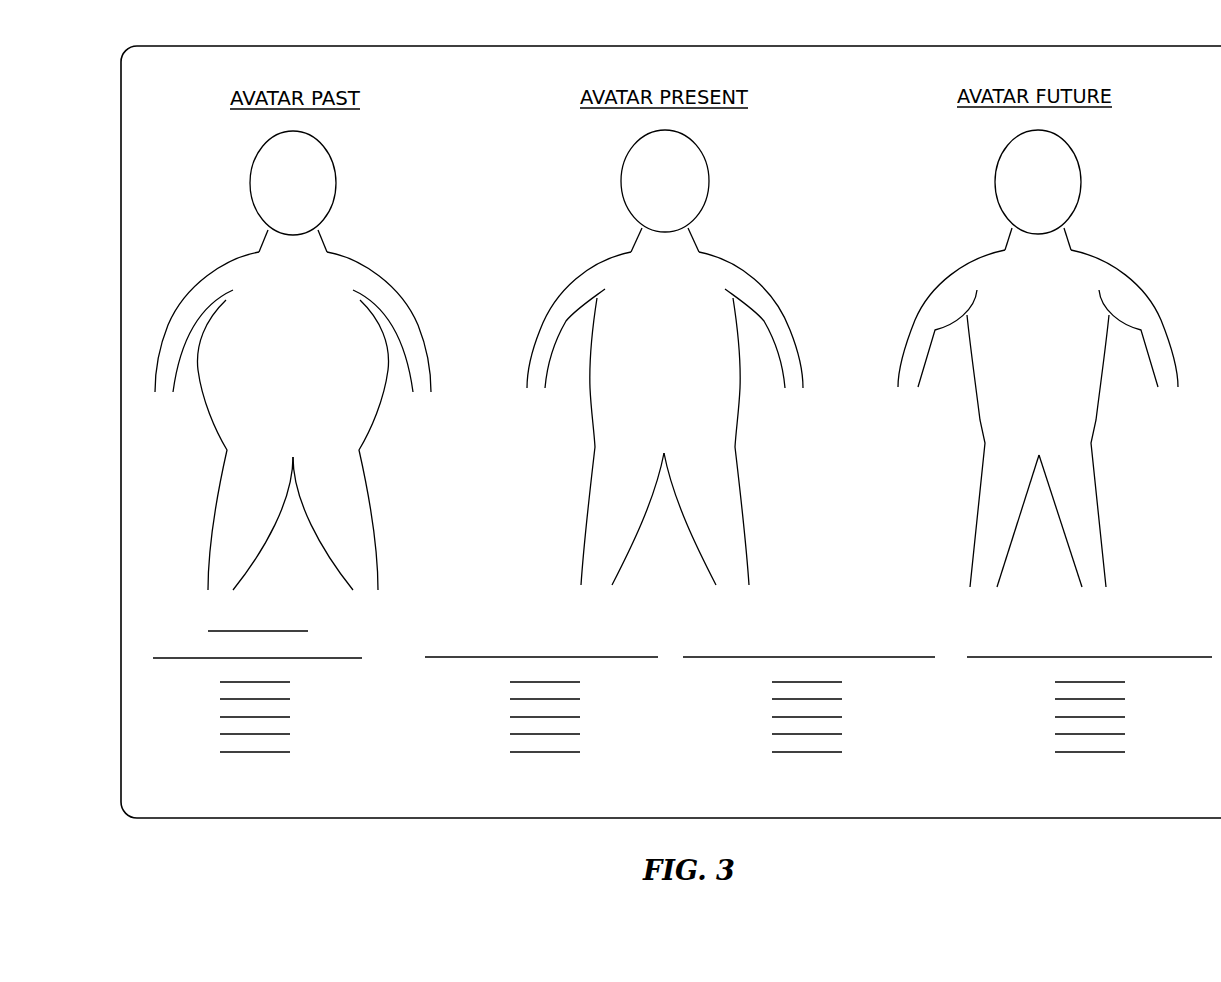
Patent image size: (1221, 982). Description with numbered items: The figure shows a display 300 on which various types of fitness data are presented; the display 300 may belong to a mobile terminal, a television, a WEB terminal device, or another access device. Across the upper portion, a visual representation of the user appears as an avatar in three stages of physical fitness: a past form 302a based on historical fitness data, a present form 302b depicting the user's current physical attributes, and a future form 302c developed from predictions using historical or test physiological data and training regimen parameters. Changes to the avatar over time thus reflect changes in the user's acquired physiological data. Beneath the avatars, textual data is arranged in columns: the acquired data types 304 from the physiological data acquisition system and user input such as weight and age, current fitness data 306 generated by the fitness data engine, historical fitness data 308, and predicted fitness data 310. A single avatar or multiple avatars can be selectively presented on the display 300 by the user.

The display 300 is at (121, 87).
The past form of the avatar 302a is at (391, 186).
The present form of the avatar 302b is at (762, 185).
The future form of the avatar 302c is at (1134, 186).
The acquired data types 304 is at (197, 768).
The current fitness data 306 is at (489, 766).
The historical fitness data 308 is at (749, 766).
The predicted fitness data 310 is at (1038, 765).